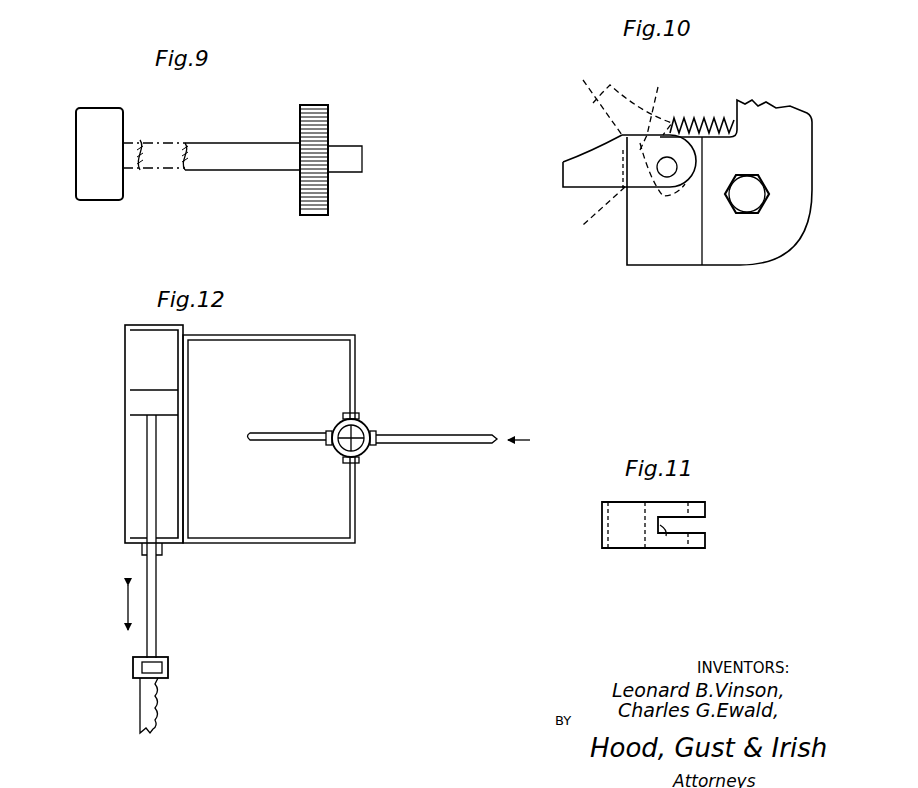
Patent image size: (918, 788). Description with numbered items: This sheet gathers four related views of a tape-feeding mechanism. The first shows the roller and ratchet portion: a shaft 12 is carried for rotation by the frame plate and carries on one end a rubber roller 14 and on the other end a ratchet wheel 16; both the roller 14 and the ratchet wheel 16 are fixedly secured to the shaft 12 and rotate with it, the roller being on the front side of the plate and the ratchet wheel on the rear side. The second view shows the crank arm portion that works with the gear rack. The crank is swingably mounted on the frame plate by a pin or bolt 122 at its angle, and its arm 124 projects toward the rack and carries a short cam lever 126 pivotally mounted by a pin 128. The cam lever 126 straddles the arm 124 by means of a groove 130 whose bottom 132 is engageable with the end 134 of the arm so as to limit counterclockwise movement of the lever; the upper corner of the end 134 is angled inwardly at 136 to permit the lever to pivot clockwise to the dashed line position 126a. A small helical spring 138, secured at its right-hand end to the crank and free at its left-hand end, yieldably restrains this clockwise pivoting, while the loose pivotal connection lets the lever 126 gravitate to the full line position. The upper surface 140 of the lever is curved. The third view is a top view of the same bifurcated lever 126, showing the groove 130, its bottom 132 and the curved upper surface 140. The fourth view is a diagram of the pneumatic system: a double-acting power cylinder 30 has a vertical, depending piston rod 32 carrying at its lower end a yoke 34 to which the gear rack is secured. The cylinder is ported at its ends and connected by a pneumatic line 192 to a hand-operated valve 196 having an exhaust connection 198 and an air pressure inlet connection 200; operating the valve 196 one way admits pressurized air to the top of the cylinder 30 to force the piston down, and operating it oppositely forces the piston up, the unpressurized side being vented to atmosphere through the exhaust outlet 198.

In FIG. 9, the shaft 12 is at (223, 145).
In FIG. 9, the rubber roller 14 is at (86, 141).
In FIG. 9, the ratchet wheel 16 is at (328, 121).
In FIG. 12, the pneumatic power cylinder 30 is at (123, 455).
In FIG. 12, the piston rod 32 is at (156, 617).
In FIG. 12, the yoke 34 is at (142, 701).
In FIG. 10, the pin 122 is at (749, 191).
In FIG. 10, the crank arm 124 is at (643, 252).
In FIG. 11, the cam lever 126 is at (670, 500).
In FIG. 10, the dashed line position 126a is at (614, 128).
In FIG. 10, the pin 128 is at (668, 170).
In FIG. 11, the groove 130 is at (687, 537).
In FIG. 10, the bottom of groove 132 is at (596, 215).
In FIG. 11, the bottom of groove 132 is at (660, 530).
In FIG. 10, the end of arm 134 is at (623, 235).
In FIG. 10, the angled corner 136 is at (658, 108).
In FIG. 10, the helical spring 138 is at (697, 122).
In FIG. 10, the upper surface 140 is at (593, 155).
In FIG. 11, the upper surface 140 is at (627, 512).
In FIG. 12, the pneumatic line 192 is at (279, 335).
In FIG. 12, the hand-operated valve 196 is at (366, 424).
In FIG. 12, the exhaust connection 198 is at (273, 430).
In FIG. 12, the air pressure inlet connection 200 is at (452, 433).